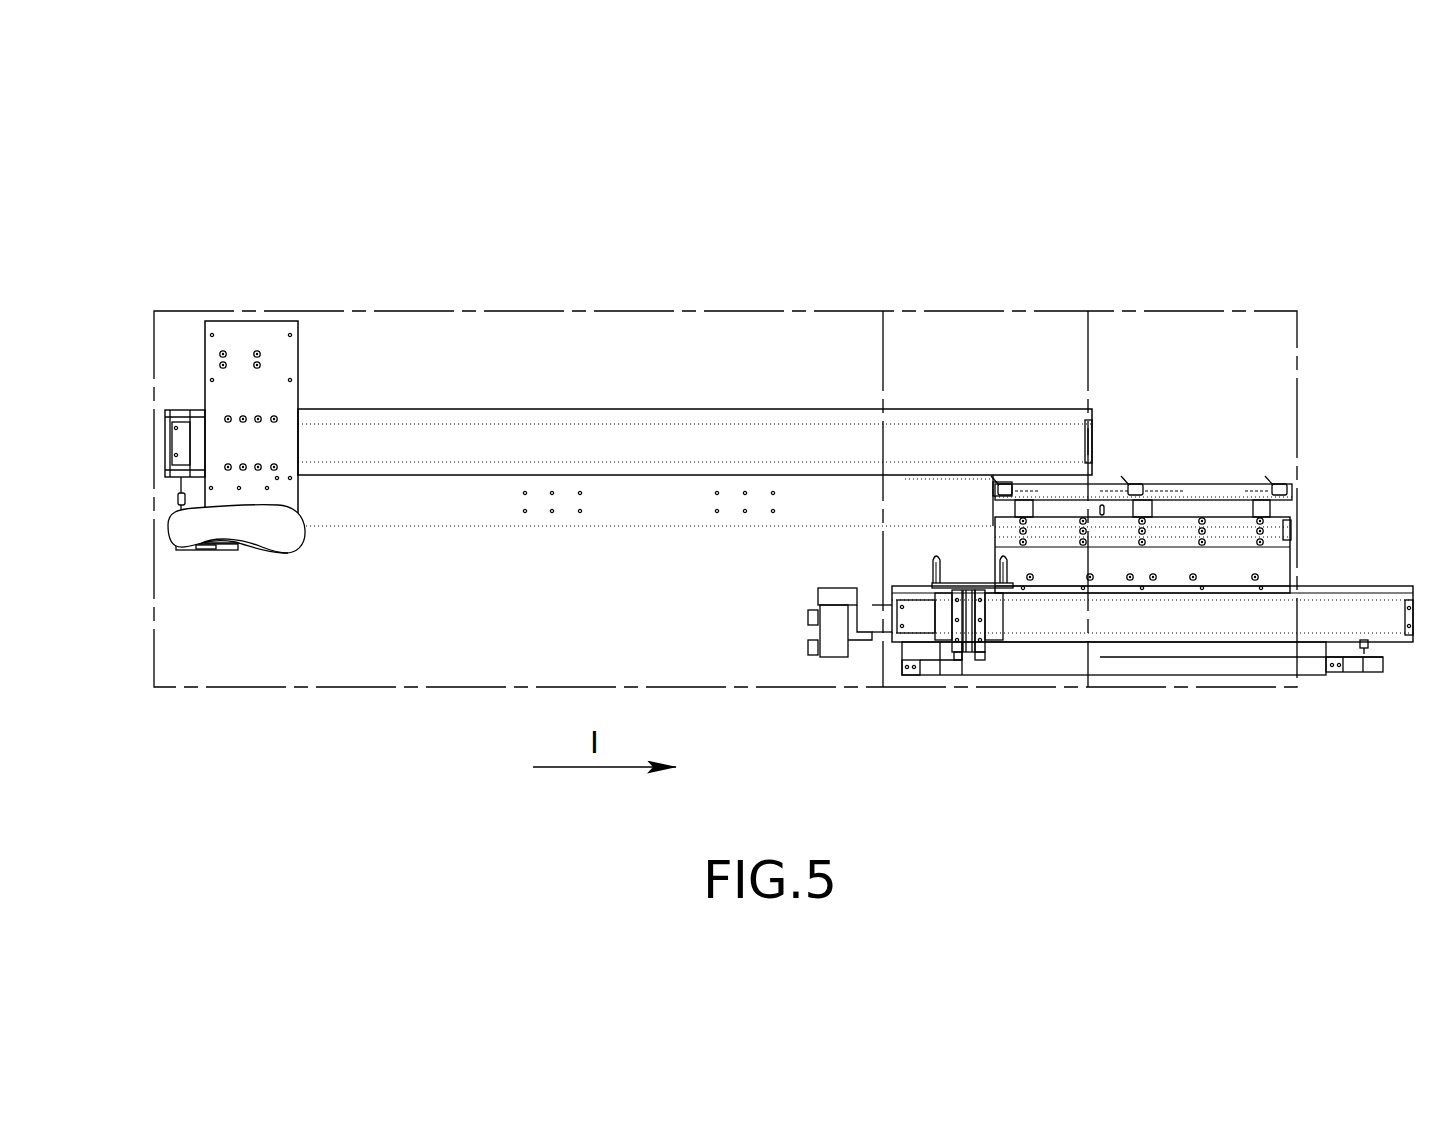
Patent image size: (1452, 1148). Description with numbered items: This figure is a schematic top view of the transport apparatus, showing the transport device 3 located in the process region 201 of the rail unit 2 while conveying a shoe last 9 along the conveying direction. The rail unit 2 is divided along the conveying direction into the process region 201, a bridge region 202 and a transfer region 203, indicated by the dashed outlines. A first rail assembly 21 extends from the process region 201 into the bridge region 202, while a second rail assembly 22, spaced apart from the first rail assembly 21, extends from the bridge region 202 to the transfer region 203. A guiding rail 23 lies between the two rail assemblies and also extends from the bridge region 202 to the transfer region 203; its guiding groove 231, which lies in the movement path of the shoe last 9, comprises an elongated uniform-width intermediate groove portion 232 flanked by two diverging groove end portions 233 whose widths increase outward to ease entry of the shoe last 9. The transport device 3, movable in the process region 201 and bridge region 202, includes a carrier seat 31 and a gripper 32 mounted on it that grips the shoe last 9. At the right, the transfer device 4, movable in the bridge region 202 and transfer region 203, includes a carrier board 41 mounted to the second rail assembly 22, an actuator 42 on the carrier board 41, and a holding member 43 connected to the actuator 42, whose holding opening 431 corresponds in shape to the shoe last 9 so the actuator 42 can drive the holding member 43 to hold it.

The rail unit 2 is at (695, 388).
The first rail assembly 21 is at (505, 440).
The second rail assembly 22 is at (1180, 620).
The guiding rail 23 is at (1277, 528).
The guiding groove 231 is at (1216, 483).
The elongated uniform-width intermediate groove portion 232 is at (1175, 530).
The diverging groove end portions 233 is at (1000, 527).
The process region 201 is at (400, 311).
The bridge region 202 is at (1013, 311).
The transfer region 203 is at (1170, 311).
The transport device 3 is at (251, 362).
The carrier seat 31 is at (255, 320).
The gripper 32 is at (208, 550).
The transfer device 4 is at (977, 697).
The carrier board 41 is at (953, 610).
The actuator 42 is at (969, 648).
The holding member 43 is at (976, 468).
The holding opening 431 is at (967, 575).
The shoe last 9 is at (290, 548).